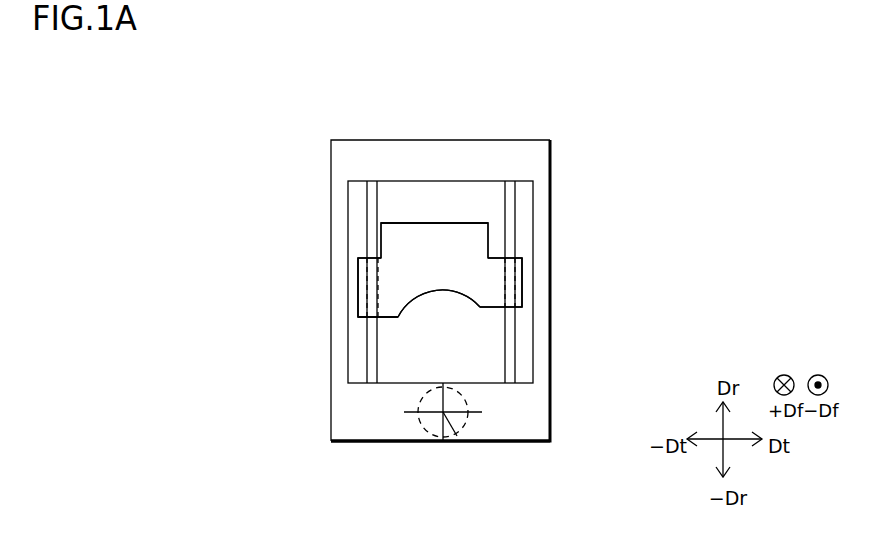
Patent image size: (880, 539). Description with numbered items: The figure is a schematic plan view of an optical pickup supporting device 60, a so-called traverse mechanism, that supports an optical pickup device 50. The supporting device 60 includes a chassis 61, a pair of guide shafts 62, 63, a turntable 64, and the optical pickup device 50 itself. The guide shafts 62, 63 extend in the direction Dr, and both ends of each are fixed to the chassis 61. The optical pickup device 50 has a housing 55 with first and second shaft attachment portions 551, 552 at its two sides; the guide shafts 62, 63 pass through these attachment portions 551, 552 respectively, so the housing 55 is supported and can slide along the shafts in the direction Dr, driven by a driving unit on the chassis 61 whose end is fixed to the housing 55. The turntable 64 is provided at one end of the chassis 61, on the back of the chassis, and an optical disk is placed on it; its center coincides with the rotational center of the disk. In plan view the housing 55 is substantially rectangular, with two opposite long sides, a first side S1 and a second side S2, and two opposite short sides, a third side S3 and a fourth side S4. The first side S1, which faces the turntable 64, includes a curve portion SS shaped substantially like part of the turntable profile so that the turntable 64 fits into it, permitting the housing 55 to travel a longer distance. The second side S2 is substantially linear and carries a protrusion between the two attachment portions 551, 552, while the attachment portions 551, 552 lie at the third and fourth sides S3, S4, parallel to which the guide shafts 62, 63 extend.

The optical pickup device 50 is at (488, 288).
The housing 55 is at (485, 225).
The first shaft attachment portion 551 is at (363, 261).
The second shaft attachment portion 552 is at (522, 258).
The optical pickup supporting device 60 is at (647, 125).
The chassis 61 is at (543, 347).
The guide shaft 62 is at (370, 384).
The guide shaft 63 is at (508, 374).
The turntable 64 is at (423, 442).
The first side S1 is at (397, 319).
The second side S2 is at (460, 222).
The third side S3 is at (358, 280).
The fourth side S4 is at (523, 267).
The curve portion SS is at (437, 292).